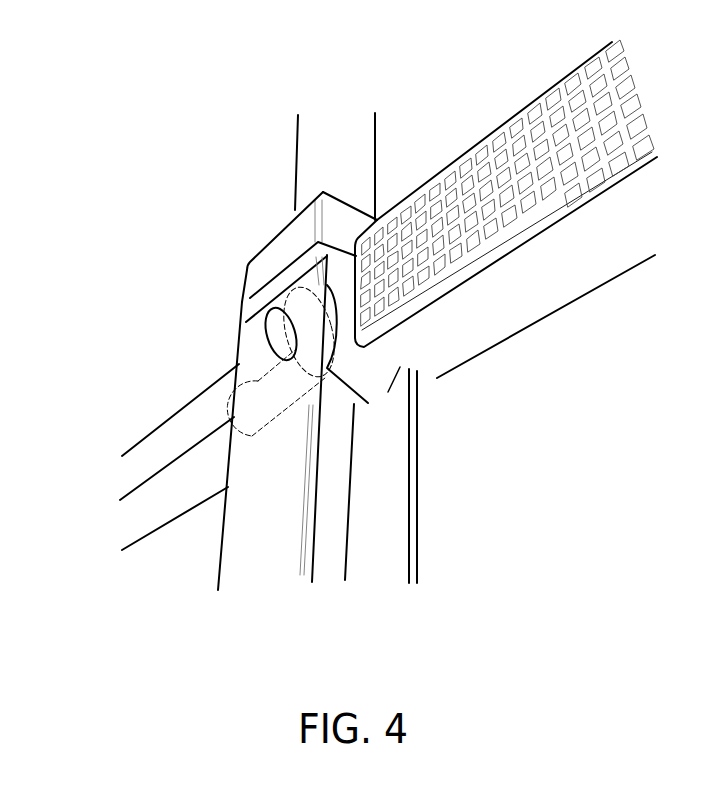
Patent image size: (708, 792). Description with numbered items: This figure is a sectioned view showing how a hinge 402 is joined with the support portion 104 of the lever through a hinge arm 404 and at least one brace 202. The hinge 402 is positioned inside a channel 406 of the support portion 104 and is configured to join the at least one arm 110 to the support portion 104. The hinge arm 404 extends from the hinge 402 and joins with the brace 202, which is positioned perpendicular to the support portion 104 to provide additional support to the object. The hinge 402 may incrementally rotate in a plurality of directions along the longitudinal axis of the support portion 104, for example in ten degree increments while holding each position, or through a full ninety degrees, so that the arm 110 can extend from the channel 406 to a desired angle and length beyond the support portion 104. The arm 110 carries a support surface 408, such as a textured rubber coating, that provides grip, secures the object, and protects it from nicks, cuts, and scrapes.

The support portion 104 is at (260, 558).
The arm 110 is at (558, 283).
The brace 202 is at (147, 433).
The hinge 402 is at (365, 373).
The hinge arm 404 is at (265, 405).
The channel 406 is at (383, 528).
The support surface 408 is at (570, 103).